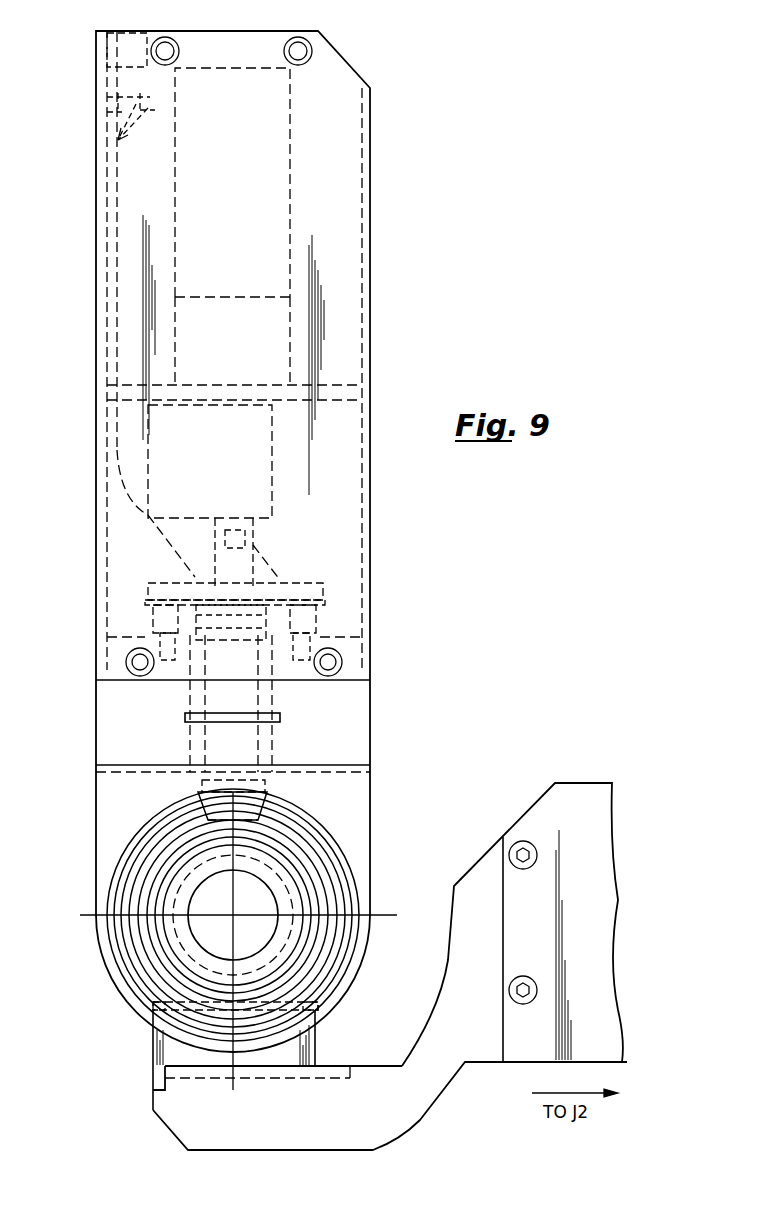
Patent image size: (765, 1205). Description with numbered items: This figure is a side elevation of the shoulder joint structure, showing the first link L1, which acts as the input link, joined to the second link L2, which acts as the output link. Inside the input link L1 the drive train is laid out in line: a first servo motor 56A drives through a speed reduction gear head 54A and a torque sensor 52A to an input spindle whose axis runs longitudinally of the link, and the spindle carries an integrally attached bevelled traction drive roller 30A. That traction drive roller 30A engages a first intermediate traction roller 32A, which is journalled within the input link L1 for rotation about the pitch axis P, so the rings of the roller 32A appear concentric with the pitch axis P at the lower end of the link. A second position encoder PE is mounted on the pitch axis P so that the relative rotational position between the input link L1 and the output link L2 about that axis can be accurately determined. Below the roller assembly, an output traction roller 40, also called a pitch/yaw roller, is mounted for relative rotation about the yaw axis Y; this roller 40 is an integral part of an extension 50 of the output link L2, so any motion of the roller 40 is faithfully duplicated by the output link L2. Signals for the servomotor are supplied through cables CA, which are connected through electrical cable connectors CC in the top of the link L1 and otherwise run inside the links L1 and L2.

The first link L1 is at (370, 355).
The second link L2 is at (536, 962).
The electrical cable connectors CC is at (160, 75).
The cables CA is at (118, 198).
The first servo motor 56A is at (248, 182).
The speed reduction gear head 54A is at (250, 344).
The torque sensor 52A is at (228, 467).
The bevelled traction drive roller 30A is at (268, 790).
The first intermediate traction roller 32A is at (283, 880).
The second position encoder PE is at (250, 903).
The pitch axis P is at (228, 918).
The yaw axis Y is at (233, 1085).
The output traction roller 40 is at (273, 978).
The extension 50 is at (397, 1088).